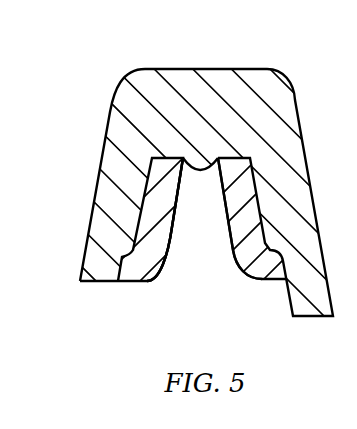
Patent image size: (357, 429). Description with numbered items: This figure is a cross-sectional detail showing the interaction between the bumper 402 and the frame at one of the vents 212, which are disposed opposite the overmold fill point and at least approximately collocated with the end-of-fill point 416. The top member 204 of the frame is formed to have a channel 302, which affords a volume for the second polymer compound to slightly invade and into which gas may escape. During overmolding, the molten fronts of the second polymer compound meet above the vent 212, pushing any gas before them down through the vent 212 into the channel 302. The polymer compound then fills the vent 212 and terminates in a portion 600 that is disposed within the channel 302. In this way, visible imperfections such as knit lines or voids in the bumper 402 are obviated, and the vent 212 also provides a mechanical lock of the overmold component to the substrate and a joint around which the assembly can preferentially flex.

The vent 212 is at (207, 103).
The bumper 402 is at (100, 227).
The top member 204 is at (153, 283).
The portion 600 is at (202, 173).
The channel 302 is at (222, 245).
The end-of-fill point 416 is at (197, 233).